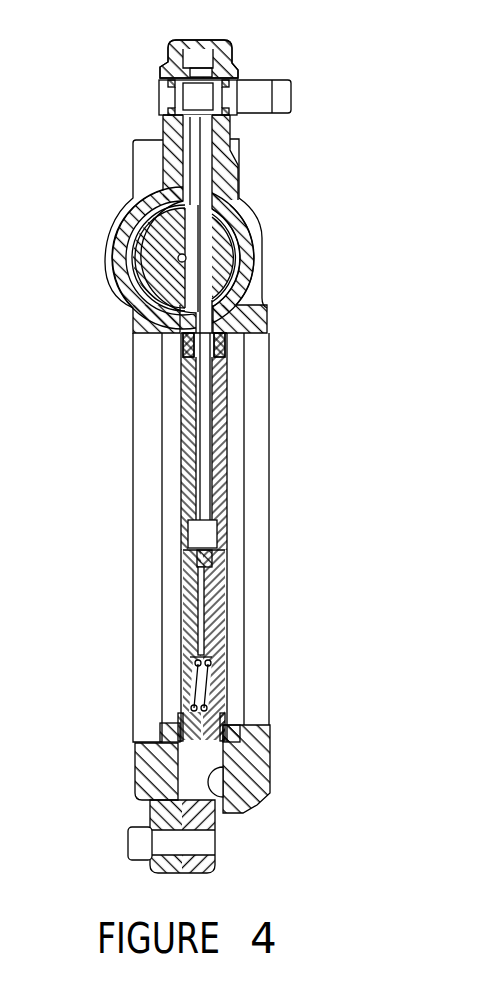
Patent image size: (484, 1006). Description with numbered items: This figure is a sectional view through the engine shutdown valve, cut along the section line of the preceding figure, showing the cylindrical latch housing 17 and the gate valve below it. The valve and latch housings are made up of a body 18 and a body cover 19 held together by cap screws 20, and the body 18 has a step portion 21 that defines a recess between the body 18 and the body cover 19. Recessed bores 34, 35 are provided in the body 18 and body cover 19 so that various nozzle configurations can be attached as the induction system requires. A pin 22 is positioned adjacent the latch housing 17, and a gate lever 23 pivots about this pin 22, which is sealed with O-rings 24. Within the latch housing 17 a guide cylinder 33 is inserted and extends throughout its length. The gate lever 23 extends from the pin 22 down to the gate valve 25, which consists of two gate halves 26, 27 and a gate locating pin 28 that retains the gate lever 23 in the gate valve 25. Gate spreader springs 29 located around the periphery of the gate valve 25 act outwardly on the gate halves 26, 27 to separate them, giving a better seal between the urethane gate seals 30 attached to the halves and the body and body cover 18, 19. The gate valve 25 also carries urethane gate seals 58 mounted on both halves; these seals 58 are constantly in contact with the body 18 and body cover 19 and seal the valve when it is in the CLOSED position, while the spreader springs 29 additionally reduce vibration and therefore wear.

The cylindrical latch housing 17 is at (247, 217).
The body 18 is at (238, 742).
The body cover 19 is at (150, 748).
The cap screws 20 is at (128, 847).
The step portion 21 is at (217, 800).
The pin 22 is at (262, 75).
The gate lever 23 is at (212, 440).
The O-rings 24 is at (163, 63).
The gate valve 25 is at (225, 628).
The gate half 26 is at (181, 620).
The gate half 27 is at (227, 575).
The gate locating pin 28 is at (218, 522).
The gate spreader springs 29 is at (213, 678).
The urethane gate seals 30 is at (178, 715).
The guide cylinder 33 is at (245, 297).
The recessed bore 34 is at (160, 732).
The recessed bore 35 is at (240, 727).
The urethane gate seals 58 is at (182, 350).